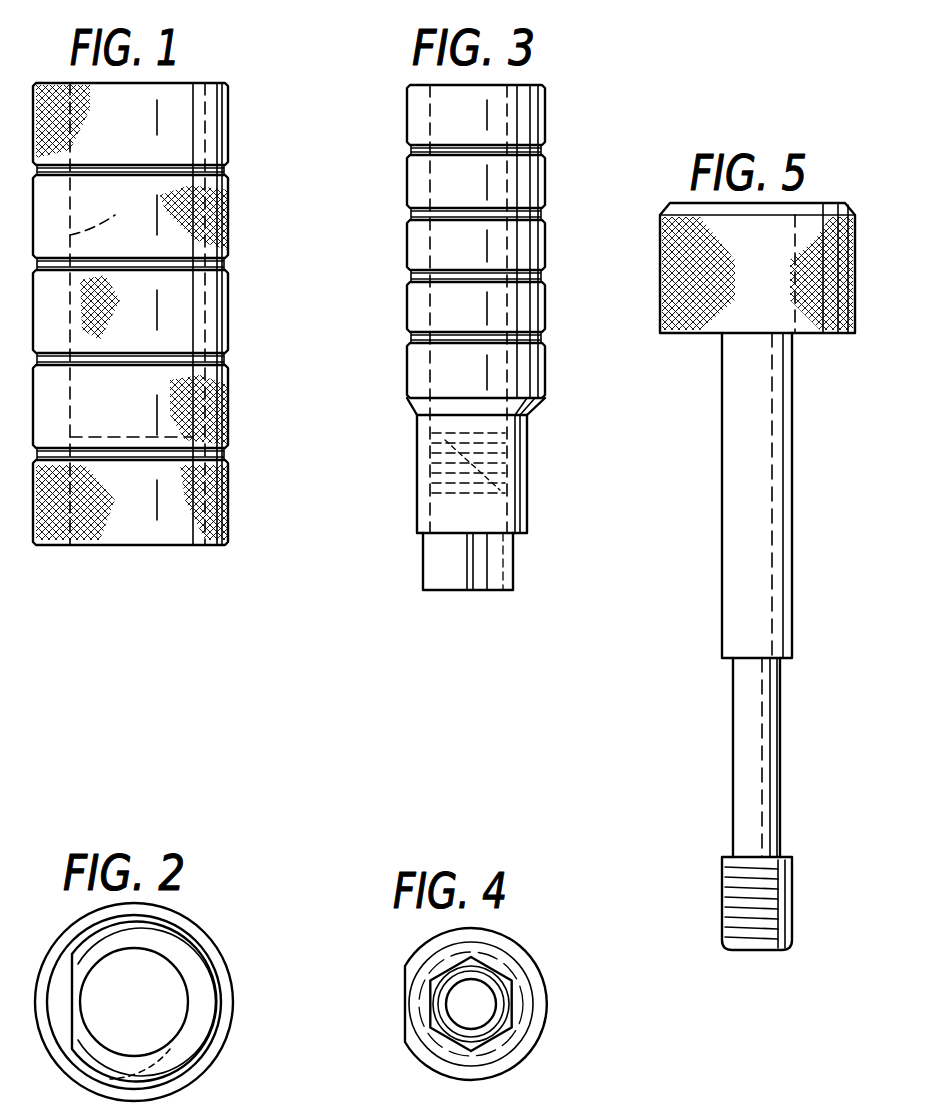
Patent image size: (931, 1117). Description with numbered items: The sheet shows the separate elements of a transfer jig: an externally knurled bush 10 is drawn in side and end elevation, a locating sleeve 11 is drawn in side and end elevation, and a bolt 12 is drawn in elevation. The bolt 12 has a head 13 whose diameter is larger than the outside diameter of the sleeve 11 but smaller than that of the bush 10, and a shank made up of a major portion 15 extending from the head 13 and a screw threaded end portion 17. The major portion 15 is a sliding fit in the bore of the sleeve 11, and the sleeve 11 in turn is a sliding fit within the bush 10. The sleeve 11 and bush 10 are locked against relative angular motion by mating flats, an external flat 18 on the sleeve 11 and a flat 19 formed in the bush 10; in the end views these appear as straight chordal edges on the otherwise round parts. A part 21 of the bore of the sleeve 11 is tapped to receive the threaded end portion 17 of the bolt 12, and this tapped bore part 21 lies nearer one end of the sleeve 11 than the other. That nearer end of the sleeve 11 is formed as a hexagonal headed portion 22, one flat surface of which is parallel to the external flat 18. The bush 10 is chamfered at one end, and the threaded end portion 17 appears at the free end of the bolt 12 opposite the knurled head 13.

In FIG. 1, the externally knurled bush 10 is at (238, 310).
In FIG. 2, the externally knurled bush 10 is at (212, 912).
In FIG. 3, the locating sleeve 11 is at (556, 192).
In FIG. 4, the locating sleeve 11 is at (548, 940).
In FIG. 5, the bolt 12 is at (792, 456).
In FIG. 5, the head 13 is at (710, 275).
In FIG. 5, the major portion 15 is at (745, 618).
In FIG. 5, the screw threaded end portion 17 is at (752, 930).
In FIG. 3, the flat 18 is at (407, 318).
In FIG. 4, the flat 18 is at (405, 1004).
In FIG. 1, the flat 19 is at (105, 209).
In FIG. 2, the flat 19 is at (74, 1020).
In FIG. 3, the tapped bore part 21 is at (498, 458).
In FIG. 4, the tapped bore part 21 is at (462, 1020).
In FIG. 3, the hexagonal headed portion 22 is at (447, 558).
In FIG. 4, the hexagonal headed portion 22 is at (488, 1035).